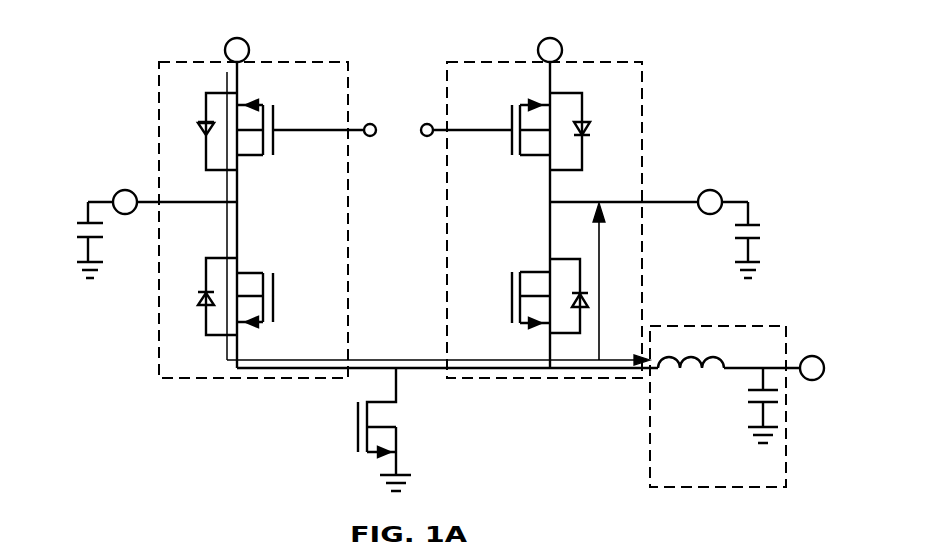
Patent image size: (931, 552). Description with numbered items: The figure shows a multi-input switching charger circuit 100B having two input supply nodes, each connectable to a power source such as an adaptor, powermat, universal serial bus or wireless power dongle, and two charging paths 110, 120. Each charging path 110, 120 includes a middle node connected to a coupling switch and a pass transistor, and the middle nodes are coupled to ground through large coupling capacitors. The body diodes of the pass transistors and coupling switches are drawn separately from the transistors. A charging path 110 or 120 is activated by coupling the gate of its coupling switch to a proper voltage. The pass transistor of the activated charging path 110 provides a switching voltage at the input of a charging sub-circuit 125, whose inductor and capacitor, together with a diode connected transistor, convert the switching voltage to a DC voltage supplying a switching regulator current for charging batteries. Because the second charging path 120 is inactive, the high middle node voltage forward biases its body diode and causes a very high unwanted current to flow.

The switching regulator circuit 100B is at (793, 0).
The charging path 110 is at (159, 82).
The charging path 120 is at (642, 95).
The charging sub-circuit 125 is at (690, 478).